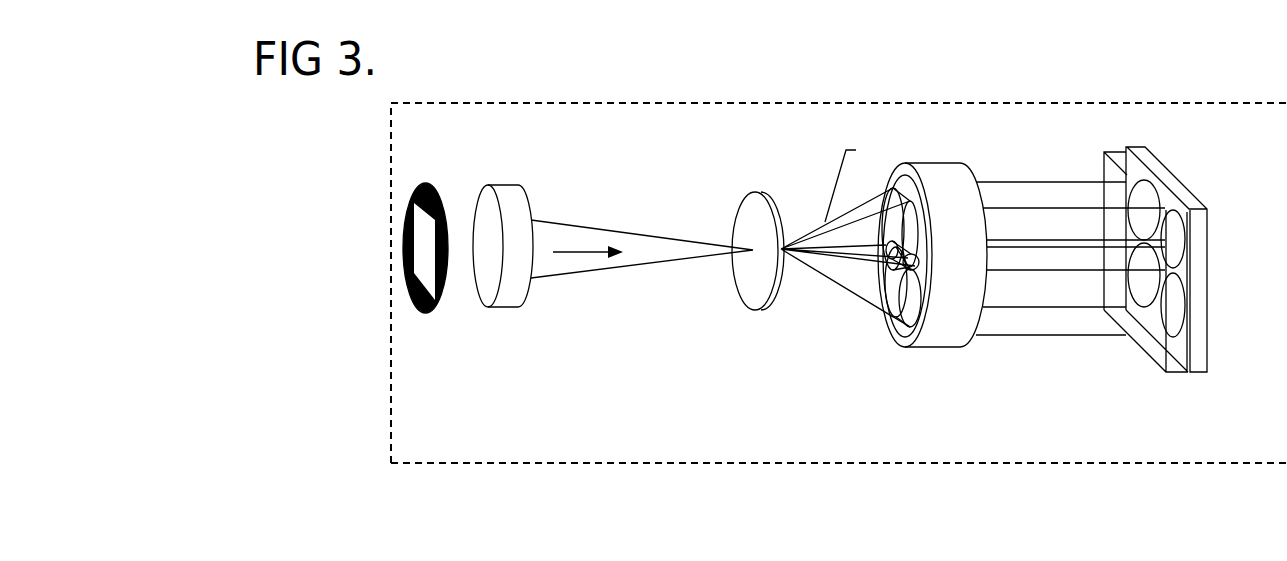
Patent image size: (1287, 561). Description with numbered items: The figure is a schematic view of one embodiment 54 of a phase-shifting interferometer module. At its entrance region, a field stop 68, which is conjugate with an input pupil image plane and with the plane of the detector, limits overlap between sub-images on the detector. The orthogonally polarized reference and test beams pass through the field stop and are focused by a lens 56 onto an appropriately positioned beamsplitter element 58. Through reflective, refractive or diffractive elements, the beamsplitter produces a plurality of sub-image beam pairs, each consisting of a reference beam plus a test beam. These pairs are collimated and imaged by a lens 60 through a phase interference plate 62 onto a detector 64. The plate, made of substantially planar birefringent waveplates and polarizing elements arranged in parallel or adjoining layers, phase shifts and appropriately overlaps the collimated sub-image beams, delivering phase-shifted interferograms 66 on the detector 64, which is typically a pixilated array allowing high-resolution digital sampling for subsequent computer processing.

The interferometer embodiment 54 is at (495, 464).
The lens 56 is at (508, 312).
The beamsplitter element 58 is at (757, 308).
The lens 60 is at (942, 350).
The phase interference plate 62 is at (1162, 372).
The detector 64 is at (1202, 373).
The phase-shifted interferograms 66 is at (1173, 247).
The field stop 68 is at (423, 313).